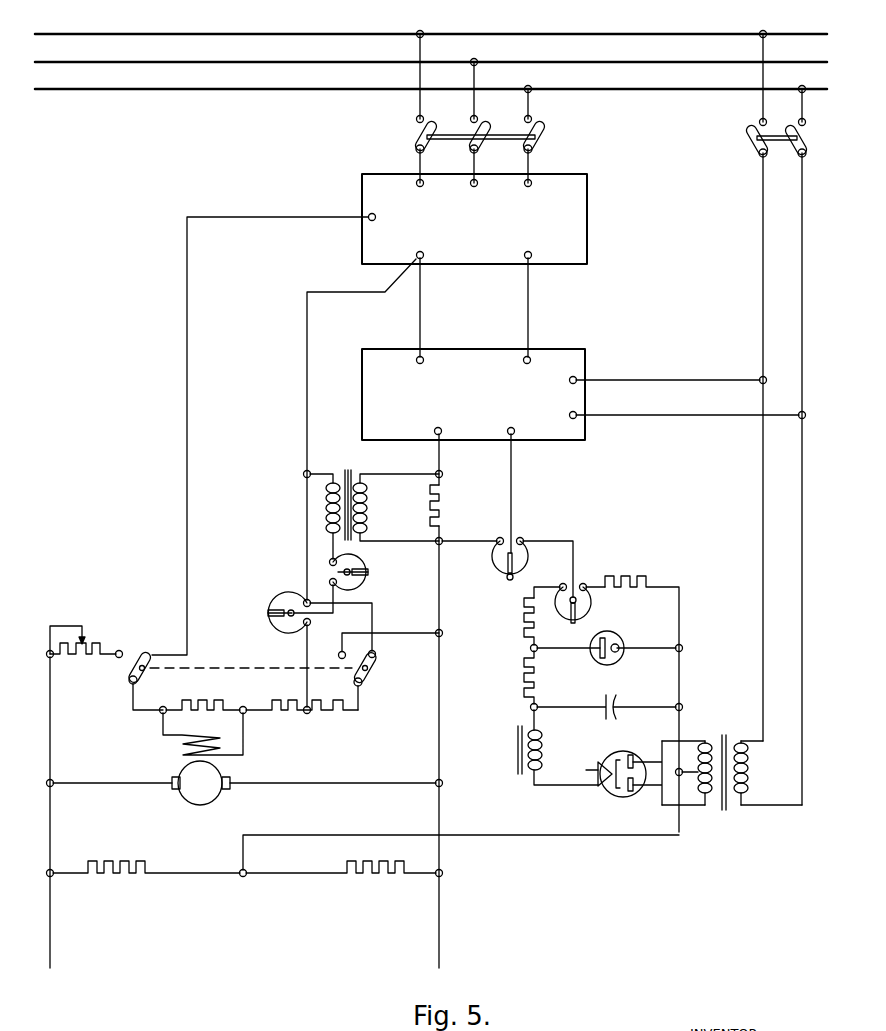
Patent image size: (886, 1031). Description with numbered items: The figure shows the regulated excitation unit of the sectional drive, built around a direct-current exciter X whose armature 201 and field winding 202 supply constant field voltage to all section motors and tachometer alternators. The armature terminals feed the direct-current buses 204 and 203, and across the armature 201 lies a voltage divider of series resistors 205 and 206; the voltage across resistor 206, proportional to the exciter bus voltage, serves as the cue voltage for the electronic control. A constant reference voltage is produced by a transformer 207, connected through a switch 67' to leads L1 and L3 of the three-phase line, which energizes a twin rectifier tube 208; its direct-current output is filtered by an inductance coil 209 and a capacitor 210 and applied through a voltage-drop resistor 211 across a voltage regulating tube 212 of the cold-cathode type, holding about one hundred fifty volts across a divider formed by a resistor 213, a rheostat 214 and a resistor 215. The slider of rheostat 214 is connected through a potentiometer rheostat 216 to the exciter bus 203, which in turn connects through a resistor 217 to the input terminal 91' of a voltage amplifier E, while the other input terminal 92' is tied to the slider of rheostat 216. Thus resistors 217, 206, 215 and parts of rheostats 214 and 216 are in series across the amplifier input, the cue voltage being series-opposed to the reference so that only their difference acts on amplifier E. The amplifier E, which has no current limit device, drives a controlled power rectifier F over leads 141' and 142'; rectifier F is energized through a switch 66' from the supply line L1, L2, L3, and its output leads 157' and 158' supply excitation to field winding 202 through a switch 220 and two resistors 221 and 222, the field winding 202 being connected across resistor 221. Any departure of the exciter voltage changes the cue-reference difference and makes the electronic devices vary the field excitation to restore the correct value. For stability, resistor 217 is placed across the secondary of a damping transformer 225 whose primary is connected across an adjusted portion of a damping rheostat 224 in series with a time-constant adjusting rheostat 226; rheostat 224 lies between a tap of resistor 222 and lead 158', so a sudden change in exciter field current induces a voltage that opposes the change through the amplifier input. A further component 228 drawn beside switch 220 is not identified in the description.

The supply line lead L1 is at (213, 33).
The supply line lead L2 is at (215, 61).
The supply line lead L3 is at (216, 88).
The switch 66' is at (499, 107).
The switch 67' is at (755, 418).
The controlled power rectifier F is at (601, 196).
The voltage amplifier E is at (586, 352).
The output lead 157' is at (260, 423).
The output lead 158' is at (339, 429).
The lead 141' is at (442, 307).
The lead 142' is at (550, 307).
The input terminal 91' is at (421, 459).
The input terminal 92' is at (529, 493).
The damping transformer 225 is at (342, 472).
The resistor 217 is at (441, 497).
The time-constant adjusting rheostat 226 is at (360, 580).
The damping rheostat 224 is at (290, 633).
The switch 220 is at (130, 676).
The potentiometer 228 is at (90, 658).
The resistor 221 is at (191, 707).
The resistor 222 is at (309, 713).
The field winding 202 is at (181, 740).
The armature 201 is at (180, 795).
The direct-current exciter X is at (160, 767).
The potentiometer rheostat 216 is at (492, 565).
The rheostat 214 is at (590, 600).
The resistor 215 is at (627, 577).
The resistor 213 is at (525, 622).
The voltage-drop resistor 211 is at (525, 680).
The voltage regulating tube 212 is at (616, 637).
The capacitor 210 is at (607, 702).
The inductance coil 209 is at (519, 749).
The twin rectifier tube 208 is at (631, 750).
The transformer 207 is at (722, 738).
The resistor 205 is at (109, 863).
The resistor 206 is at (386, 862).
The direct-current bus 204 is at (50, 930).
The direct-current bus 203 is at (437, 930).